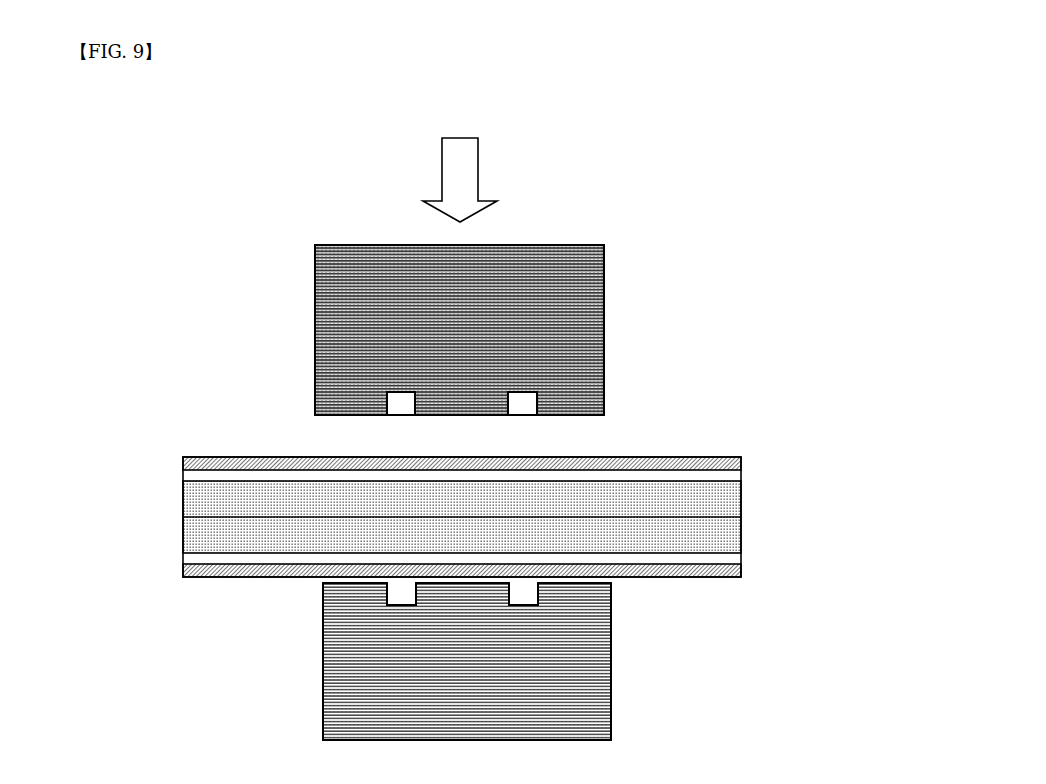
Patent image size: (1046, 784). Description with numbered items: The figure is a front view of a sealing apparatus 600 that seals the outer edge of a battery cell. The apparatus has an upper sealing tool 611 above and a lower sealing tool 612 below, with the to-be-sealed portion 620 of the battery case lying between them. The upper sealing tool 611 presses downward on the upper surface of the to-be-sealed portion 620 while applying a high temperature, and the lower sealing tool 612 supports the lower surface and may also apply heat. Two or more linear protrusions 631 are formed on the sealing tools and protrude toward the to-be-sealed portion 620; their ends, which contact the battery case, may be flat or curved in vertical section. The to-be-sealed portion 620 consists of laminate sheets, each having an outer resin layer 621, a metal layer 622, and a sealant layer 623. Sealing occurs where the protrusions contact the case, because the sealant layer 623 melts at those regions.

The sealing apparatus 600 is at (120, 149).
The upper sealing tool 611 is at (605, 283).
The lower sealing tool 612 is at (606, 650).
The linear protrusions 631 is at (604, 400).
The to-be-sealed portion 620 is at (482, 490).
The resin layer 621 is at (742, 462).
The metal layer 622 is at (742, 481).
The sealant layer 623 is at (482, 517).